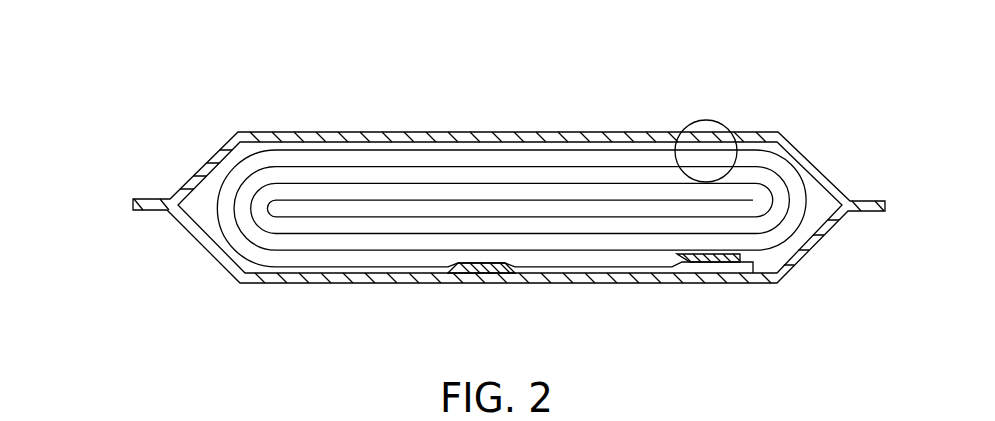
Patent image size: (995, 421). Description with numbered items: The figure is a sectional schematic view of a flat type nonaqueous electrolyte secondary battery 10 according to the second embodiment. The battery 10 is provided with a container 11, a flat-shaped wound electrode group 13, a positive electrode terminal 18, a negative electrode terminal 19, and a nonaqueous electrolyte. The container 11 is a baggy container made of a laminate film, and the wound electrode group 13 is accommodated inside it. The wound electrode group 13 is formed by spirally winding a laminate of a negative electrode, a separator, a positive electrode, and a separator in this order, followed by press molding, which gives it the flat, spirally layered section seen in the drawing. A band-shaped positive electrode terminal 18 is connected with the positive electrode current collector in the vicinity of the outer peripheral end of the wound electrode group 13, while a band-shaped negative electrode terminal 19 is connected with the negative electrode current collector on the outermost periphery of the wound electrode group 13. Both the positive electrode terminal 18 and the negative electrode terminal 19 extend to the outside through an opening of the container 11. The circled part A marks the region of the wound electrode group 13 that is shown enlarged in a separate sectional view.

The battery 10 is at (597, 58).
The container 11 is at (542, 133).
The wound electrode group 13 is at (338, 158).
The positive electrode terminal 18 is at (708, 256).
The negative electrode terminal 19 is at (488, 273).
The part A is at (704, 120).